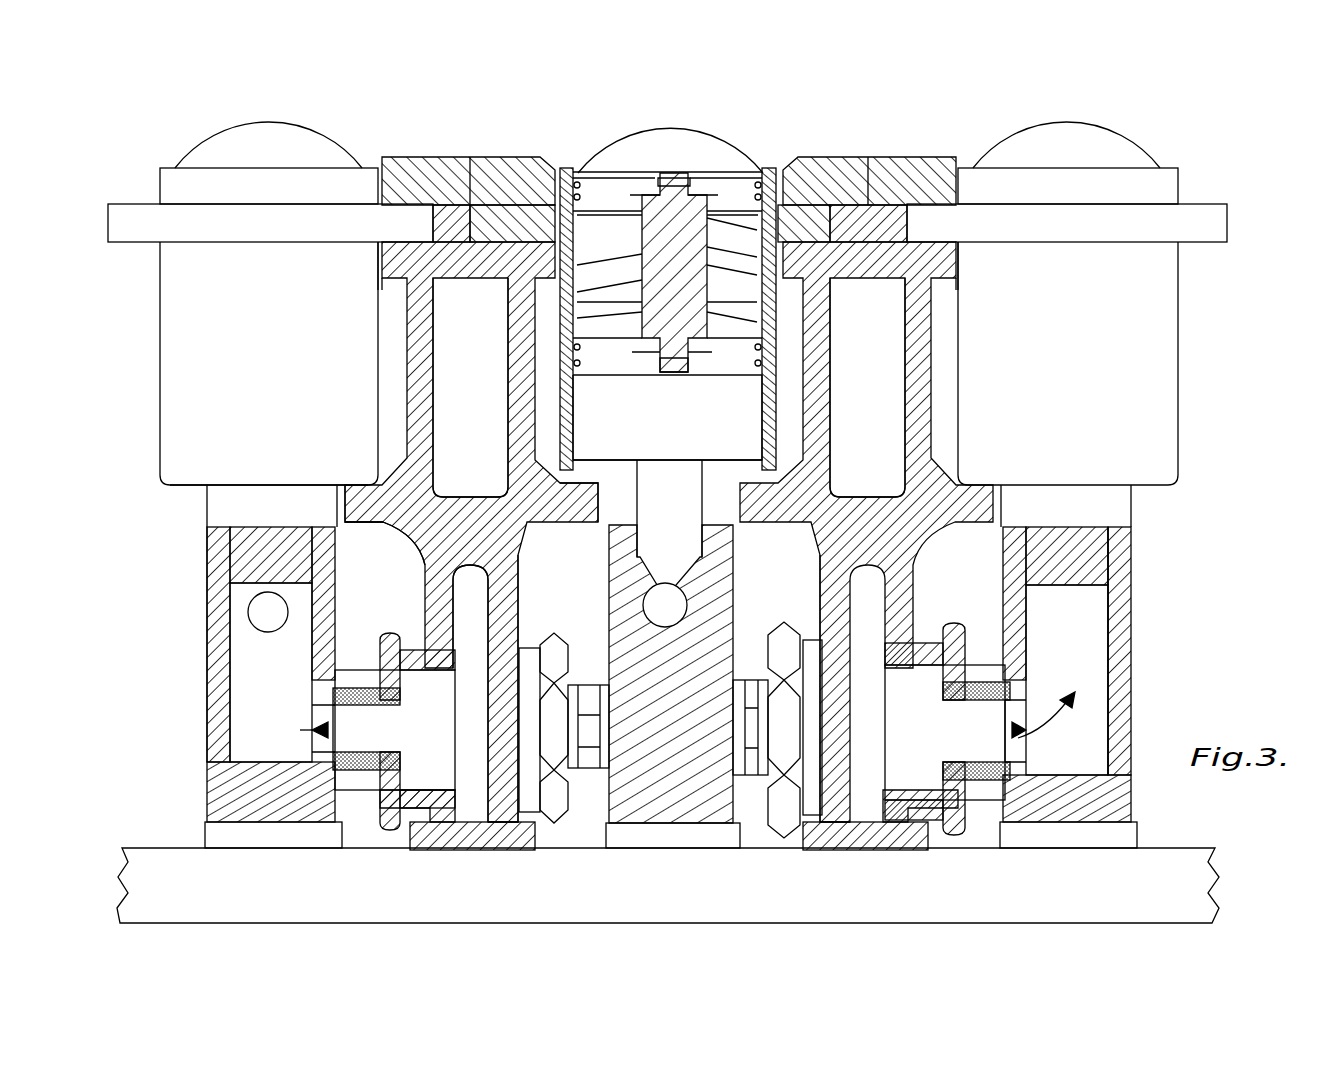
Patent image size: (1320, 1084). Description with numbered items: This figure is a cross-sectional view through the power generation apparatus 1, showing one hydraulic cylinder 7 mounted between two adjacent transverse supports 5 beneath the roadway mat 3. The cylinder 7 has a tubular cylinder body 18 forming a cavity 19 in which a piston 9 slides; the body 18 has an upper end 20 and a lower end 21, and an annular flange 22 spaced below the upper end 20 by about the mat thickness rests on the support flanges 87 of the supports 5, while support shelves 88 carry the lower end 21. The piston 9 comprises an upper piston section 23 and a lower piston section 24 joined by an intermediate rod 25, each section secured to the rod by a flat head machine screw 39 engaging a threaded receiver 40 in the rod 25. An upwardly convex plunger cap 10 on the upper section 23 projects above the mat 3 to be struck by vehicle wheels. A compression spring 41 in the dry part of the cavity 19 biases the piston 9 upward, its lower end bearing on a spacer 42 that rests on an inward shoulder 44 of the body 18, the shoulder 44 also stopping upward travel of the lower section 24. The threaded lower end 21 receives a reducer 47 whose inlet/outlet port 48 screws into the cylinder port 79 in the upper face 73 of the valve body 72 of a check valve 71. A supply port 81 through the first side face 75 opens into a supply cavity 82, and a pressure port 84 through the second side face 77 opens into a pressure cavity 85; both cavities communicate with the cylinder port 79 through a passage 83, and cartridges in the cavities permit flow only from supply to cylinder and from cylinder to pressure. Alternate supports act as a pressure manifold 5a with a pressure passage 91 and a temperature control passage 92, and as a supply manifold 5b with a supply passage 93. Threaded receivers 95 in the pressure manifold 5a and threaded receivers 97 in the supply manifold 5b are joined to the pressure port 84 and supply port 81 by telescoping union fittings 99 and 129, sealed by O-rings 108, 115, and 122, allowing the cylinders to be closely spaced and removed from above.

The power generation apparatus 1 is at (1225, 416).
The mat 3 is at (905, 160).
The transverse parallel supports 5 is at (508, 437).
The pressure manifold 5a is at (520, 602).
The supply manifold 5b is at (828, 600).
The hydraulic cylinder 7 is at (308, 124).
The piston 9 is at (738, 150).
The plunger cap 10 is at (642, 128).
The cylinder body 18 is at (160, 338).
The cavity 19 is at (772, 406).
The upper end 20 is at (178, 165).
The lower end 21 is at (165, 485).
The annular flange 22 is at (136, 203).
The upper piston section 23 is at (600, 170).
The lower piston section 24 is at (640, 378).
The intermediate rod 25 is at (705, 186).
The flat head machine screw 39 is at (668, 176).
The threaded receiver 40 is at (650, 193).
The compression spring 41 is at (712, 276).
The spacer 42 is at (765, 326).
The shoulder 44 is at (585, 335).
The reducer 47 is at (728, 466).
The inlet/outlet port 48 is at (725, 546).
The check valve 71 is at (200, 552).
The valve body 72 is at (207, 630).
The upper face 73 is at (232, 527).
The first side face 75 is at (207, 705).
The second side face 77 is at (345, 608).
The cylinder port 79 is at (607, 562).
The supply port 81 is at (1012, 694).
The supply cavity 82 is at (1048, 763).
The passage 83 is at (668, 588).
The pressure port 84 is at (312, 698).
The pressure cavity 85 is at (270, 740).
The support flange 87 is at (385, 284).
The support shelf 88 is at (352, 487).
The pressure passage 91 is at (458, 703).
The temperature control passage 92 is at (455, 380).
The supply passage 93 is at (852, 380).
The threaded receiver 95 is at (445, 672).
The threaded receiver 97 is at (890, 660).
The telescoping union fitting 99 is at (398, 832).
The O-ring 108 is at (428, 642).
The O-ring 115 is at (398, 786).
The O-ring 122 is at (340, 688).
The telescoping union fitting 129 is at (786, 842).